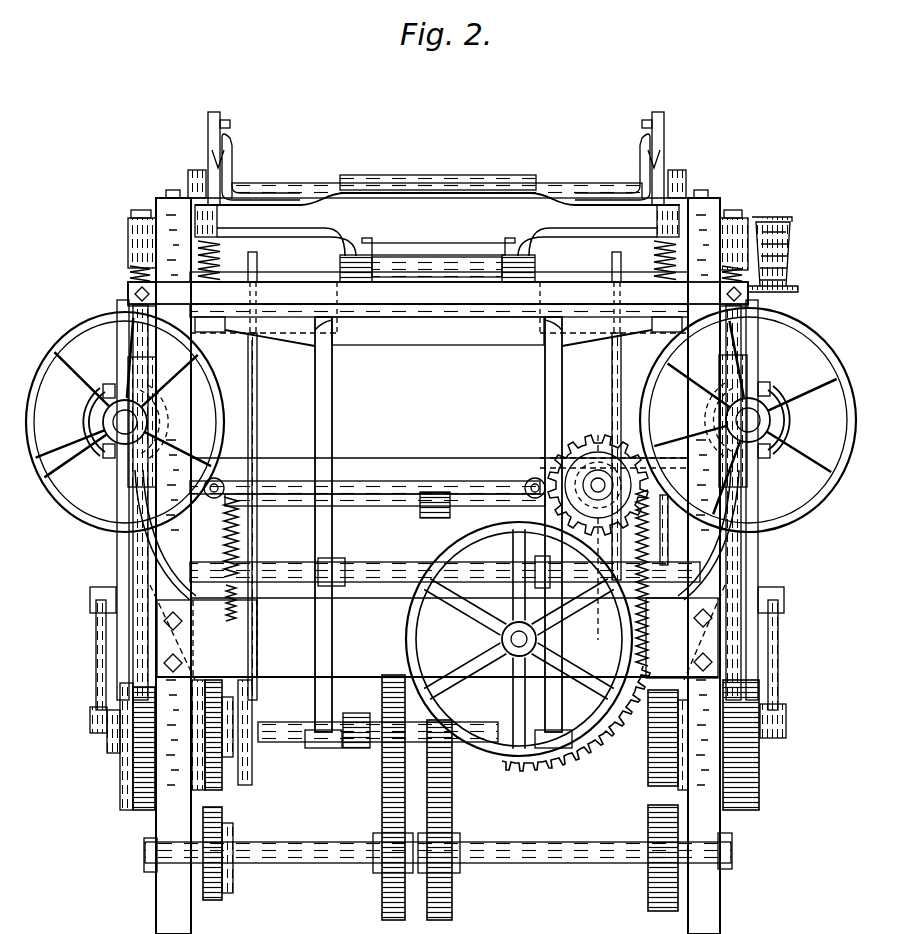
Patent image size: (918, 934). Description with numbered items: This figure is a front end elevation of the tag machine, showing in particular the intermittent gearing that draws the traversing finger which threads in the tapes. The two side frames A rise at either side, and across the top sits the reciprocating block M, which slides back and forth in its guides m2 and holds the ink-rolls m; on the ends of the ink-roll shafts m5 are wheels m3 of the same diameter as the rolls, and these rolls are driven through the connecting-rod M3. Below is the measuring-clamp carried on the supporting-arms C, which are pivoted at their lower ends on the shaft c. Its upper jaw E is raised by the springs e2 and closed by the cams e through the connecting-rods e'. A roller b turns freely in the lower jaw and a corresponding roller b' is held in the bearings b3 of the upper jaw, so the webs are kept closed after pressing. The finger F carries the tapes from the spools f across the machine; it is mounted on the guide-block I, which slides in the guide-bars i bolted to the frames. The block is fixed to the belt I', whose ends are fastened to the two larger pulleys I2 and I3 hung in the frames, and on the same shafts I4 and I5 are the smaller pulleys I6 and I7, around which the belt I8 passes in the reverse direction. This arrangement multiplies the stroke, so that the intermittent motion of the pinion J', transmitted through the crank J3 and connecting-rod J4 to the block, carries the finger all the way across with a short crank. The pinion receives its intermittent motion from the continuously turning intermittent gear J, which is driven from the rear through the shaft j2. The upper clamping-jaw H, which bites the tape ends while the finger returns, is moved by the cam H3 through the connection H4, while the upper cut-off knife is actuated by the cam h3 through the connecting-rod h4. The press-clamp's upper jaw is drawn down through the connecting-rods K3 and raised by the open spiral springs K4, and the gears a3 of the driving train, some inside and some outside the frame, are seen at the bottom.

The side frame A is at (172, 225).
The ink-roll shaft m5 is at (272, 184).
The ink-roll m is at (444, 186).
The guide m2 is at (208, 123).
The reciprocating block M is at (217, 170).
The wheel or roller m3 is at (191, 182).
The upper jaw E is at (400, 254).
The bearing b3 is at (362, 262).
The roller b' is at (437, 249).
The roller b is at (439, 288).
The spring e2 is at (216, 256).
The guide-block I is at (438, 309).
The belt I' is at (439, 326).
The guide-bar i is at (548, 296).
The finger F is at (612, 286).
The open spiral spring K4 is at (132, 272).
The spool f is at (786, 258).
The upper clamping-jaw H is at (258, 258).
The connection H4 is at (257, 384).
The connecting-rod h4 is at (612, 380).
The supporting-arm C is at (333, 388).
The pulley I3 is at (72, 334).
The shaft I5 is at (124, 422).
The smaller pulley I6 is at (104, 452).
The pulley I2 is at (796, 335).
The shaft I4 is at (750, 420).
The smaller pulley I7 is at (766, 442).
The connecting-rod K3 is at (135, 634).
The connecting-rod J4 is at (408, 482).
The belt I8 is at (356, 462).
The connecting-rod e' is at (455, 553).
The intermittent gear J is at (445, 639).
The shaft j2 is at (516, 640).
The crank J3 is at (548, 480).
The pinion J' is at (614, 517).
The cam h3 is at (622, 746).
The shaft c is at (272, 724).
The gear a3 is at (122, 775).
The cam e is at (440, 795).
The cam H3 is at (246, 730).
The connecting-rod M3 is at (92, 700).